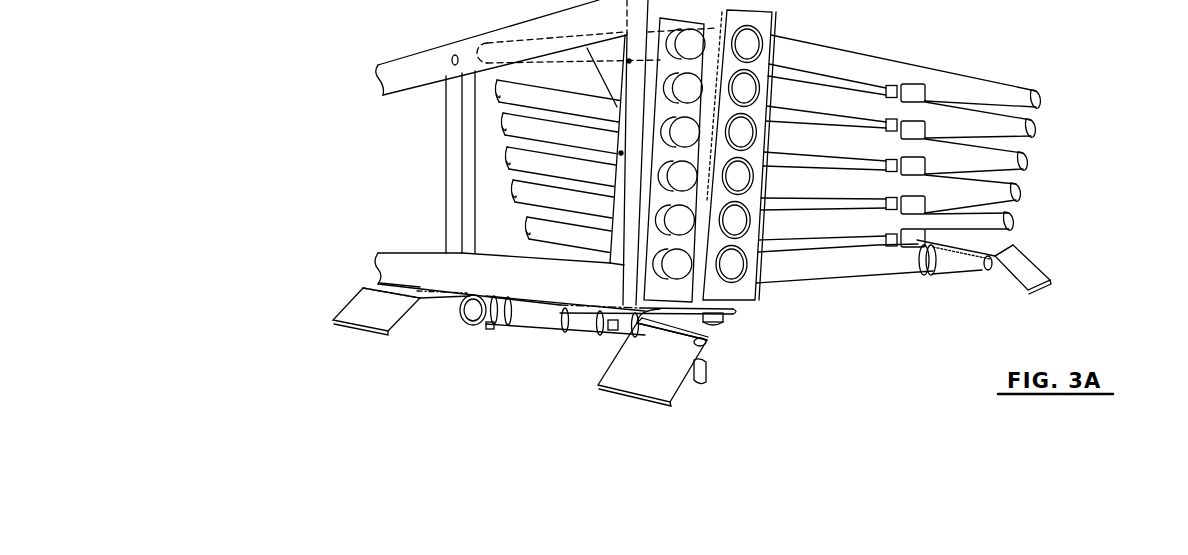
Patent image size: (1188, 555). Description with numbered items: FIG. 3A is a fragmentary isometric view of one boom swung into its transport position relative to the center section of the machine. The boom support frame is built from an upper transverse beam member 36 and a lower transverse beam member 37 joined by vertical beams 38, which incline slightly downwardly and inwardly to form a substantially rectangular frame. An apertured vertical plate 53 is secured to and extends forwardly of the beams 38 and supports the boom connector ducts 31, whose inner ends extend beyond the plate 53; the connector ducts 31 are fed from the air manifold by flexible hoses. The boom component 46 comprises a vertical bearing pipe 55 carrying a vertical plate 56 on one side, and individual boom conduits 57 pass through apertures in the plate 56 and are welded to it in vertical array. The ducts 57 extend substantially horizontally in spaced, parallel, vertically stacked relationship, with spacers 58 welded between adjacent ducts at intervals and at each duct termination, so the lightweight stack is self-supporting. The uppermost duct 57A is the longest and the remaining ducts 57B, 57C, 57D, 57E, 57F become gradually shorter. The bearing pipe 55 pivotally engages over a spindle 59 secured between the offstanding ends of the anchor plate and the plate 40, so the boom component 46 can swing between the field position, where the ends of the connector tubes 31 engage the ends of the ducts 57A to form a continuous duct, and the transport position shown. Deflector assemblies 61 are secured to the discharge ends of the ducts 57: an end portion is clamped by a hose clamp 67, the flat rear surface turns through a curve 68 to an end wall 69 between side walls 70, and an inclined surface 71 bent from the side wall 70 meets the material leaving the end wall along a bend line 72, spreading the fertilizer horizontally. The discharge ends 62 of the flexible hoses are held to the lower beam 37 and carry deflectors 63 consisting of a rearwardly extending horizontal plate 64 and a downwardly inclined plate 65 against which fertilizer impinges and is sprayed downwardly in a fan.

The boom connector duct 31 is at (532, 184).
The upper transverse beam member 36 is at (405, 66).
The lower transverse beam member 37 is at (397, 258).
The vertical beam 38 is at (628, 122).
The plate 40 is at (672, 304).
The boom component 46 is at (1010, 72).
The apertured vertical plate 53 is at (660, 197).
The vertical bearing pipe 55 is at (770, 28).
The vertical plate 56 is at (760, 67).
The boom conduit 57 is at (744, 272).
The uppermost duct 57A is at (1040, 91).
The boom duct 57B is at (1034, 121).
The boom duct 57C is at (1027, 153).
The boom duct 57D is at (1020, 184).
The boom duct 57E is at (1013, 214).
The boom duct 57F is at (832, 277).
The spacer 58 is at (911, 88).
The spindle 59 is at (718, 318).
The deflector assembly 61 is at (1083, 279).
The discharge end of hose 62 is at (470, 316).
The deflector 63 is at (327, 342).
The horizontal plate 64 is at (423, 293).
The inclined plate 65 is at (357, 312).
The hose clamp 67 is at (490, 330).
The curve 68 is at (945, 256).
The end wall 69 is at (985, 260).
The side wall 70 is at (1001, 246).
The inclined surface 71 is at (1034, 277).
The bend line 72 is at (703, 345).